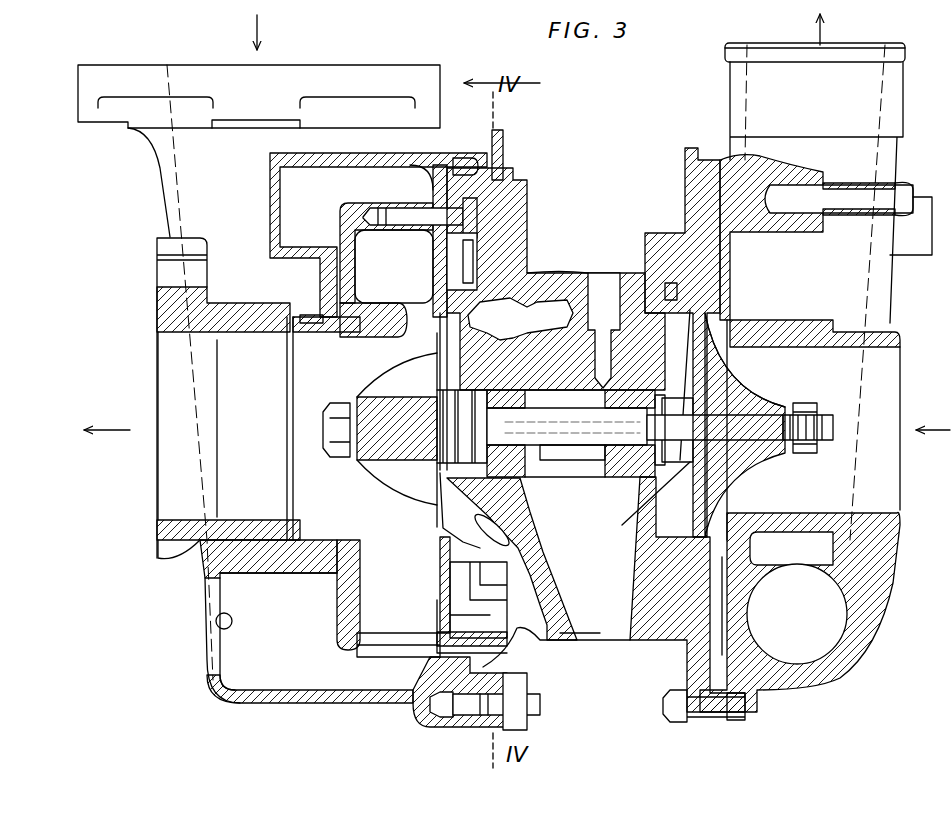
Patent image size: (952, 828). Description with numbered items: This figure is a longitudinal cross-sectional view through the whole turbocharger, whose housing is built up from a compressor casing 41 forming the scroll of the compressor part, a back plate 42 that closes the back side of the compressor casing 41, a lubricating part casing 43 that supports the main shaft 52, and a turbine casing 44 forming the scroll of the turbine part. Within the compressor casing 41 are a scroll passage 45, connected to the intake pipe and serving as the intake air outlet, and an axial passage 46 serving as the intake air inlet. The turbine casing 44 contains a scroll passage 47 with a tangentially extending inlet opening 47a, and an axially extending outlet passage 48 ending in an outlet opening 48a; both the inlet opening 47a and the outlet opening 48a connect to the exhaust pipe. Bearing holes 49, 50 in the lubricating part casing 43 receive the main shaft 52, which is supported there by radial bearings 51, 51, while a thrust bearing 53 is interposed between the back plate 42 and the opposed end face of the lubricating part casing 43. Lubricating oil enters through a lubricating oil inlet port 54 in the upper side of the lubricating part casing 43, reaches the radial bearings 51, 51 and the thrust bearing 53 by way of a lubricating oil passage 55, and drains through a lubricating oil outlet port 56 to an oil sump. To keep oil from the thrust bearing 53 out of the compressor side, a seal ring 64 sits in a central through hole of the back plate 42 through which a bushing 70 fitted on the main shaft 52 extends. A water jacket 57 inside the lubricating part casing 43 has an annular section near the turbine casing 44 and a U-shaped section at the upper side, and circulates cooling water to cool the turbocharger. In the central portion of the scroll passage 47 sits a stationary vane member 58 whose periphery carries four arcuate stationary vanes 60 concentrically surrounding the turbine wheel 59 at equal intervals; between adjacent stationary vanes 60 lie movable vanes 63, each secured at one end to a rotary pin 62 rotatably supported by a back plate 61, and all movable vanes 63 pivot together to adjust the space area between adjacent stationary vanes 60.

The compressor casing 41 is at (860, 585).
The back plate 42 is at (668, 625).
The lubricating part casing 43 is at (540, 641).
The turbine casing 44 is at (338, 706).
The scroll passage 45 is at (838, 640).
The axial passage 46 is at (866, 526).
The scroll passage 47 is at (210, 636).
The inlet opening 47a is at (172, 80).
The outlet passage 48 is at (283, 520).
The outlet opening 48a is at (168, 337).
The bearing hole 49 is at (567, 466).
The bearing hole 50 is at (592, 466).
The radial bearing 51 is at (520, 464).
The main shaft 52 is at (575, 464).
The thrust bearing 53 is at (655, 464).
The lubricating oil inlet port 54 is at (605, 280).
The lubricating oil passage 55 is at (533, 372).
The lubricating oil outlet port 56 is at (605, 626).
The water jacket 57 is at (548, 305).
The stationary vane member 58 is at (337, 578).
The turbine wheel 59 is at (357, 395).
The stationary vane 60 is at (412, 207).
The back plate 61 is at (433, 279).
The rotary pin 62 is at (530, 690).
The movable vane 63 is at (400, 660).
The seal ring 64 is at (705, 468).
The bushing 70 is at (707, 410).